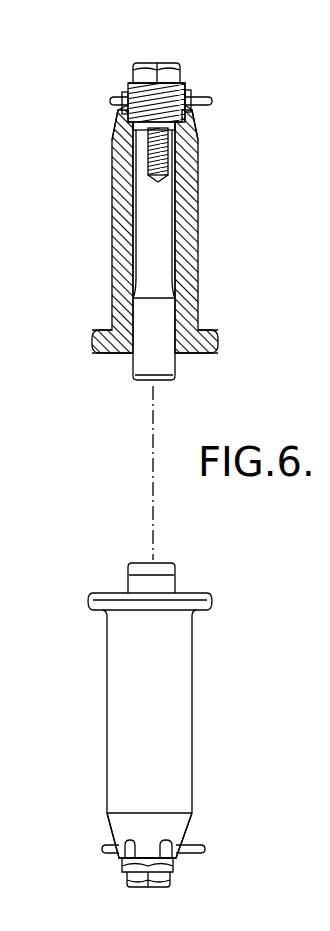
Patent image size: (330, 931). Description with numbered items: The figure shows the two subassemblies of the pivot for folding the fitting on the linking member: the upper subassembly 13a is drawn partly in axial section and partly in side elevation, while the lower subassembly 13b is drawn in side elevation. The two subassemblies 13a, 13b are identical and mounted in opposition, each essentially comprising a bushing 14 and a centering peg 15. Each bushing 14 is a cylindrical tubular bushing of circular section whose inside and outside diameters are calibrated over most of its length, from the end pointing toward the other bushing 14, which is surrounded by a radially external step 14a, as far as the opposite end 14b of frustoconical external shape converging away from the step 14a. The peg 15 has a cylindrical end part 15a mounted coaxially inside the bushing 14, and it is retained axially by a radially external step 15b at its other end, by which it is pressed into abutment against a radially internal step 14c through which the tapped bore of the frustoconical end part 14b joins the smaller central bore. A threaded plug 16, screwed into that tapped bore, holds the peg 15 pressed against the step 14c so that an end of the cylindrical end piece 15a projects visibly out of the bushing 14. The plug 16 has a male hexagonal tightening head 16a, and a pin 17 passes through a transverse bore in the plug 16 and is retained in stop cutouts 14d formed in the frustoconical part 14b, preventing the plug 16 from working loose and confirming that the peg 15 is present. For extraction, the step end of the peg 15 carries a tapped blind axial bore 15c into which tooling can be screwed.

The upper subassembly 13a is at (203, 190).
The lower subassembly 13b is at (199, 721).
The bushing 14 is at (183, 284).
The radially external step 14a is at (214, 349).
The frusto-conical end 14b is at (197, 115).
The radially internal step 14c is at (196, 137).
The stop cutouts 14d is at (192, 96).
The centering peg 15 is at (153, 205).
The cylindrical end part 15a is at (148, 369).
The radially external step 15b is at (130, 126).
The tapped blind axial bore 15c is at (148, 155).
The threaded plug 16 is at (213, 101).
The hexagonal tightening head 16a is at (166, 66).
The pin 17 is at (112, 101).